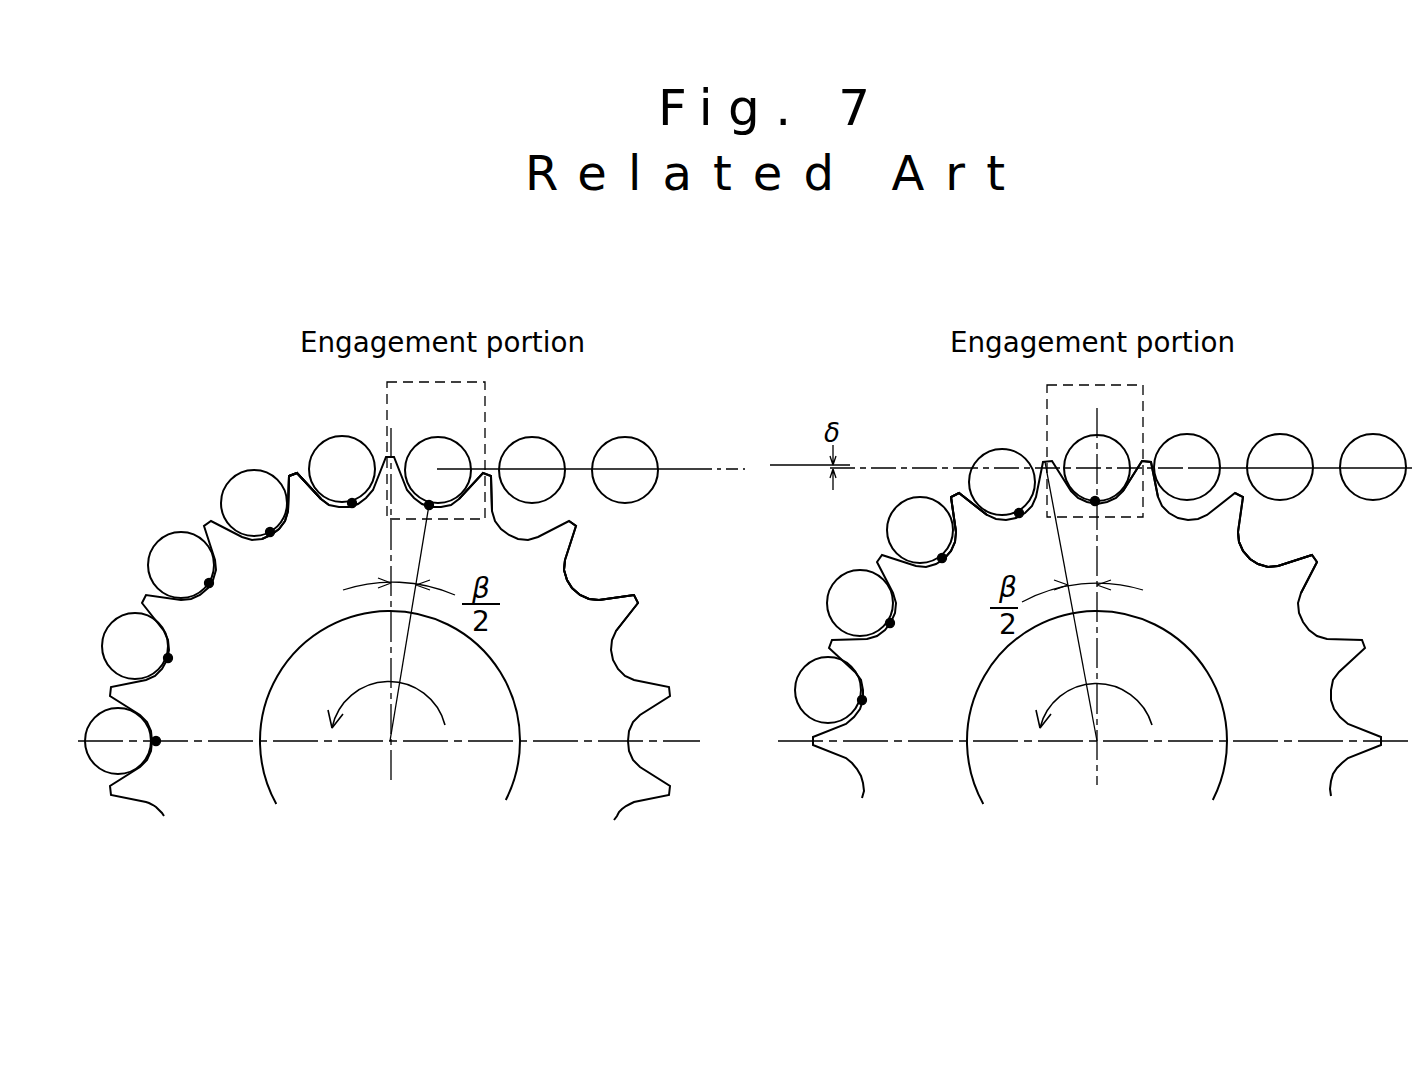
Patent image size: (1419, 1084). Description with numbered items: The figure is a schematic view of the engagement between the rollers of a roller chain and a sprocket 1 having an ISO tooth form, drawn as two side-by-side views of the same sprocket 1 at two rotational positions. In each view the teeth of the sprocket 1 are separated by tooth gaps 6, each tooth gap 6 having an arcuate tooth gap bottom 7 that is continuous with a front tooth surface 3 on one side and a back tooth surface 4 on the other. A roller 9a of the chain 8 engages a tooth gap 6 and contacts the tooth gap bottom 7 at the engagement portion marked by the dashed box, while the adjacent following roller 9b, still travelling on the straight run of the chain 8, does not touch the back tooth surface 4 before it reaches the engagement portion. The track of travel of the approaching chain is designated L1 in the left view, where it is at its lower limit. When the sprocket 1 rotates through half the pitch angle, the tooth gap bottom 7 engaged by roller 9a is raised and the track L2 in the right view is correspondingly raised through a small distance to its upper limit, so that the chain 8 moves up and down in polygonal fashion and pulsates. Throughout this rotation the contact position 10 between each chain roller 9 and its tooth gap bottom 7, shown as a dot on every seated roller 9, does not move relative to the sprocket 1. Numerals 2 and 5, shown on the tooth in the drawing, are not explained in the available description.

The sprocket 1 is at (255, 577).
The sprocket tooth 2 is at (622, 604).
The front tooth surface 3 is at (298, 482).
The back tooth surface 4 is at (304, 468).
The tooth flank (opposite side) 5 is at (289, 463).
The tooth gap 6 is at (607, 560).
The tooth gap bottom 7 is at (575, 582).
The chain 8 is at (617, 420).
The chain roller 9 is at (232, 490).
The roller 9a is at (448, 495).
The adjacent following roller 9b is at (550, 448).
The contact position 10 is at (352, 508).
The track of travel of the chain L1 is at (705, 465).
The track L2 is at (1235, 455).